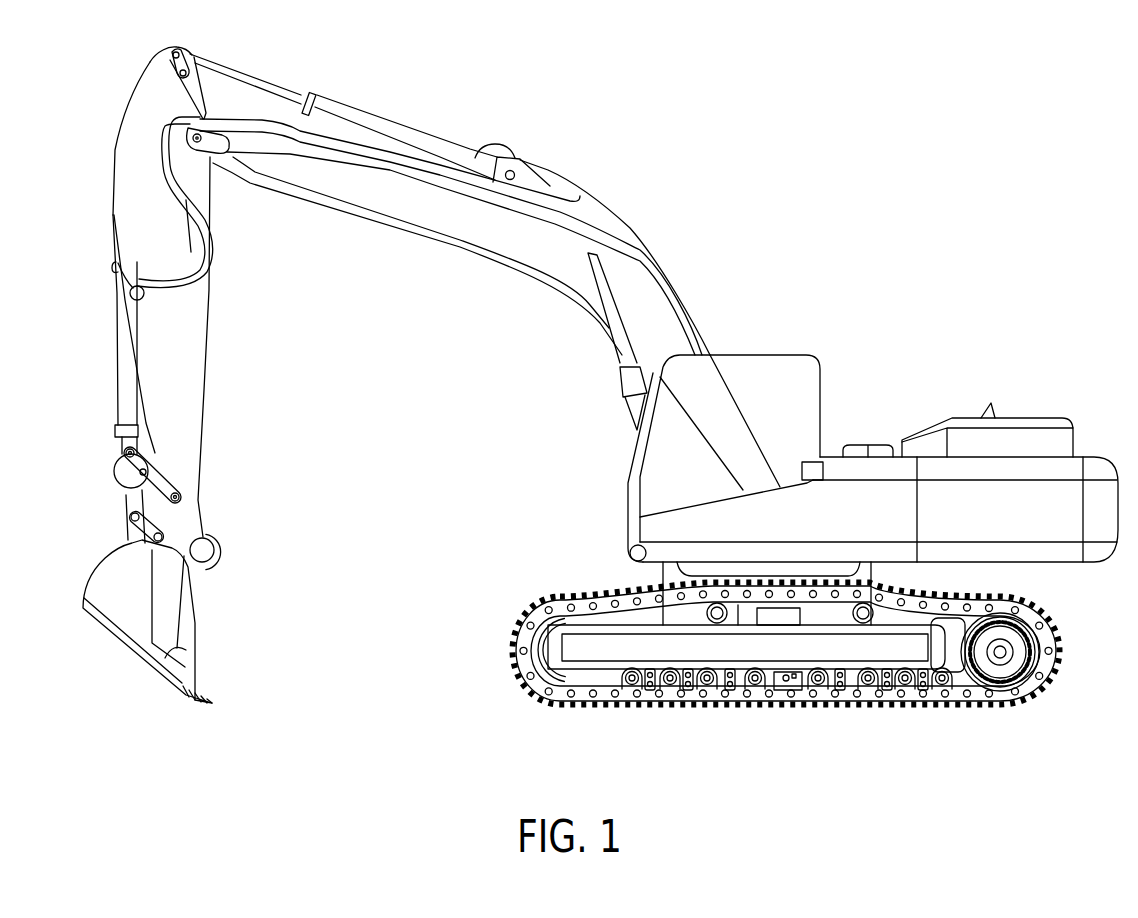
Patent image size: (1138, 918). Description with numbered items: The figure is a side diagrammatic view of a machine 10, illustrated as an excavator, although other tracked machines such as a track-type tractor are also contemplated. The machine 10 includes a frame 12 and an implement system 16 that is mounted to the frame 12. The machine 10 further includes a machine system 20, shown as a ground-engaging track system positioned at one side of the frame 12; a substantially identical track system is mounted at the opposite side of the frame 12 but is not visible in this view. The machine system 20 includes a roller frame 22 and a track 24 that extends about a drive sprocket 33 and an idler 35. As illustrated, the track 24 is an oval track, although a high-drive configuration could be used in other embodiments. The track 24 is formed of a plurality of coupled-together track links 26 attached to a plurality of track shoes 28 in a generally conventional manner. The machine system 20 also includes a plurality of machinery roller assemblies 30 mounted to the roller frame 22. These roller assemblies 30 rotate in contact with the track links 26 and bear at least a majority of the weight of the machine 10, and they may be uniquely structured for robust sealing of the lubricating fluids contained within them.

The machine 10 is at (1016, 160).
The frame 12 is at (980, 563).
The implement system 16 is at (238, 599).
The machine system 20 is at (520, 707).
The roller frame 22 is at (612, 650).
The track 24 is at (750, 710).
The track links 26 is at (857, 690).
The track shoes 28 is at (893, 707).
The roller assemblies 30 is at (703, 687).
The drive sprocket 33 is at (1000, 697).
The idler 35 is at (520, 655).